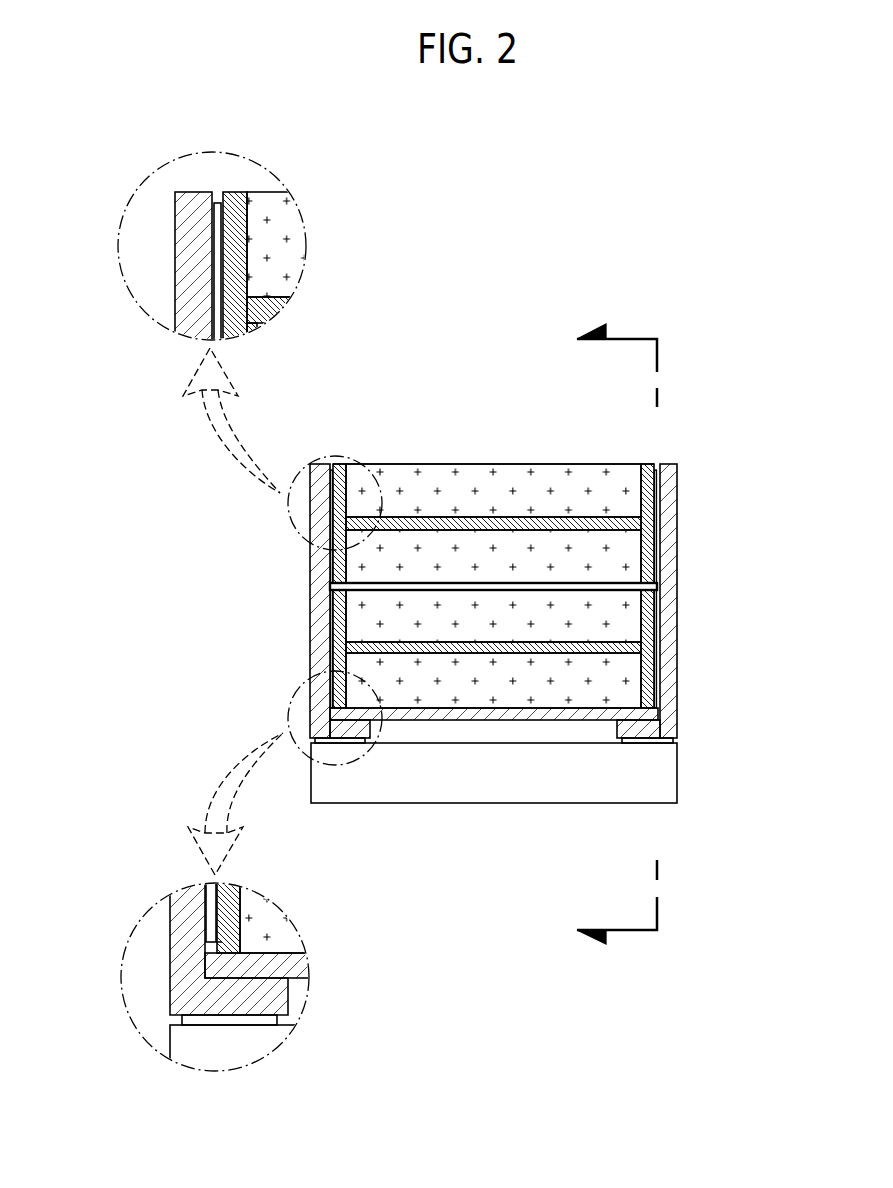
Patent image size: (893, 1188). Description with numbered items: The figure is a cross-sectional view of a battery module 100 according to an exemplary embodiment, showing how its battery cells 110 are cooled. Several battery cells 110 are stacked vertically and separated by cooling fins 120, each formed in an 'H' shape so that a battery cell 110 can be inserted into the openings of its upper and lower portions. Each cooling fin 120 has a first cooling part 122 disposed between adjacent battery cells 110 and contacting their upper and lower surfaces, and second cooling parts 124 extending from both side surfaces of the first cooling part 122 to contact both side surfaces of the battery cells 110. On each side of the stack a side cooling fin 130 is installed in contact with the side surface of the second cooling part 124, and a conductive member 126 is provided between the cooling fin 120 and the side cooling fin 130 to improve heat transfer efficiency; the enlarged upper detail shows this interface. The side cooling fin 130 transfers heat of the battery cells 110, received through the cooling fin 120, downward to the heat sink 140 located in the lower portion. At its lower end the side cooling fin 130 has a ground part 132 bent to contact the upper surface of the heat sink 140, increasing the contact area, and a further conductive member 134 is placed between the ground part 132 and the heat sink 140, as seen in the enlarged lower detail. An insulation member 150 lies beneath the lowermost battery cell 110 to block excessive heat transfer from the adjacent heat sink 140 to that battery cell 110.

The battery module 100 is at (497, 409).
The battery cell 110 is at (625, 490).
The cooling fin 120 is at (781, 500).
The first cooling part 122 is at (233, 200).
The second cooling part 124 is at (648, 502).
The conductive member 126 is at (212, 217).
The side cooling fin 130 is at (188, 240).
The ground part 132 is at (643, 746).
The conductive member 134 is at (205, 1027).
The heat sink 140 is at (655, 773).
The insulation member 150 is at (583, 712).